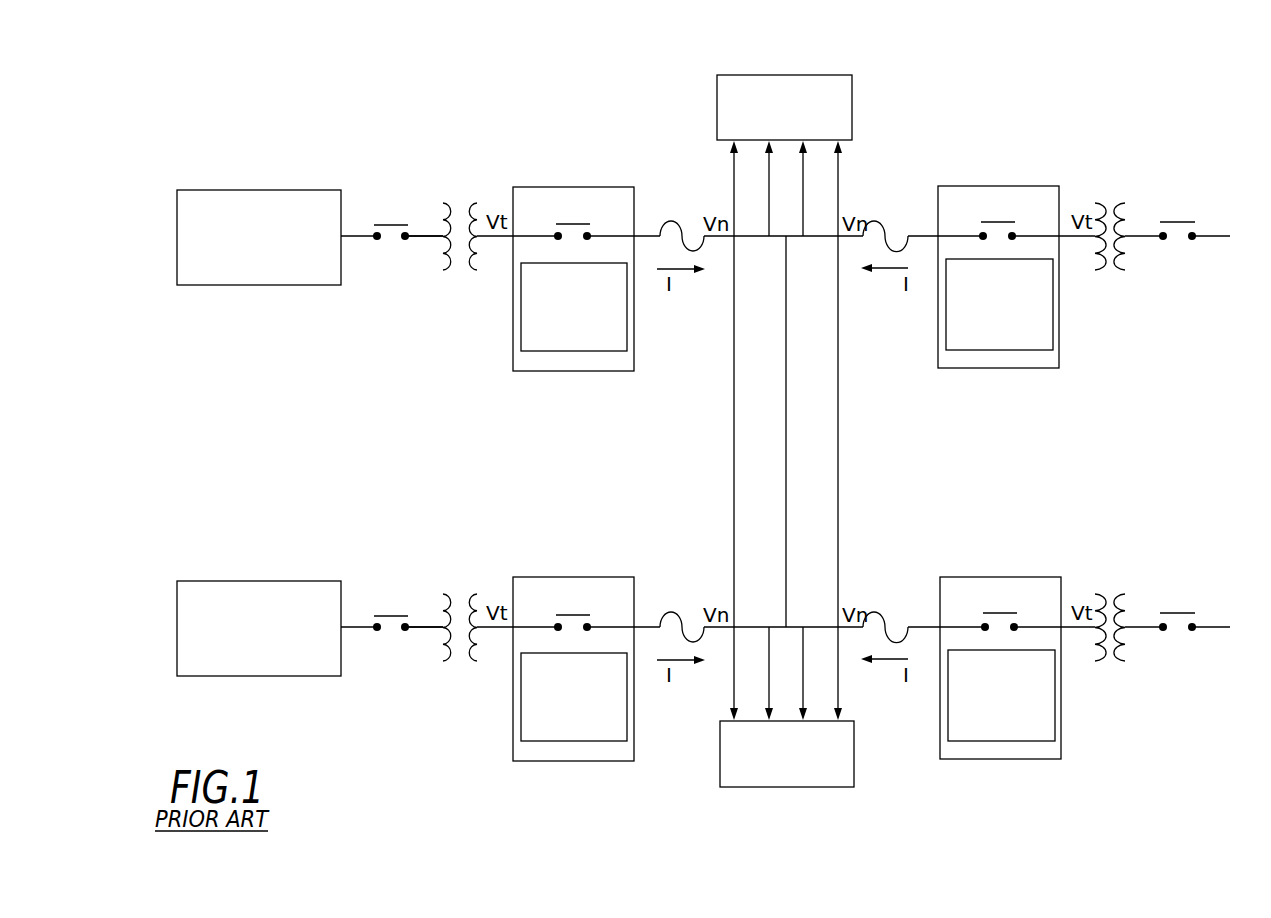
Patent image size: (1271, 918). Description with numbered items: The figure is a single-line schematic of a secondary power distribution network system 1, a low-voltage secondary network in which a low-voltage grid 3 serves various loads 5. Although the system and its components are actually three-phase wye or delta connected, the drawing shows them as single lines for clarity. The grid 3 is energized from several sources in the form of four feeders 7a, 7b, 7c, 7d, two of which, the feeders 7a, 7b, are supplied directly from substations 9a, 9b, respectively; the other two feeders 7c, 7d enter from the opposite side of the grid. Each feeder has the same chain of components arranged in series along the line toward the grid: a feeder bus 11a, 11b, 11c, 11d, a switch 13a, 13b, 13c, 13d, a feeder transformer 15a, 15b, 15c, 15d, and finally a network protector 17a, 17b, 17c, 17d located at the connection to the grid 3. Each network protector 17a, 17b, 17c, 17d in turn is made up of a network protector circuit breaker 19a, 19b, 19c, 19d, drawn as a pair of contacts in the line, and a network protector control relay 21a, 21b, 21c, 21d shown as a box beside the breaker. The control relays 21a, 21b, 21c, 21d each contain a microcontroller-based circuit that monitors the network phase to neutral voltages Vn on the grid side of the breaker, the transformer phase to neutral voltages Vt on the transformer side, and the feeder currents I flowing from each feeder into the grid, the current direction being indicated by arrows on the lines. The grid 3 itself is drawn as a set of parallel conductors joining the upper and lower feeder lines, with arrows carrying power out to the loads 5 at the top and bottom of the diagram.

The secondary power distribution network system 1 is at (1040, 451).
The low-voltage grid 3 is at (860, 455).
The loads 5 is at (815, 75).
The feeder 7a is at (410, 183).
The feeder 7b is at (410, 574).
The feeder 7c is at (1156, 179).
The feeder 7d is at (1156, 570).
The substation 9a is at (202, 190).
The substation 9b is at (202, 581).
The feeder bus 11a is at (424, 238).
The feeder bus 11b is at (424, 629).
The feeder bus 11c is at (1144, 238).
The feeder bus 11d is at (1144, 629).
The switch 13a is at (396, 224).
The switch 13b is at (396, 615).
The switch 13c is at (1173, 222).
The switch 13d is at (1173, 613).
The feeder transformer 15a is at (470, 268).
The feeder transformer 15b is at (470, 659).
The feeder transformer 15c is at (1099, 266).
The feeder transformer 15d is at (1099, 657).
The network protector 17a is at (558, 231).
The network protector 17b is at (559, 622).
The network protector 17c is at (1022, 230).
The network protector 17d is at (1023, 621).
The network protector circuit breaker 19a is at (598, 187).
The network protector circuit breaker 19b is at (598, 577).
The network protector circuit breaker 19c is at (970, 186).
The network protector circuit breaker 19d is at (970, 577).
The network protector control relay 21a is at (523, 337).
The network protector control relay 21b is at (523, 728).
The network protector control relay 21c is at (1045, 335).
The network protector control relay 21d is at (1047, 726).